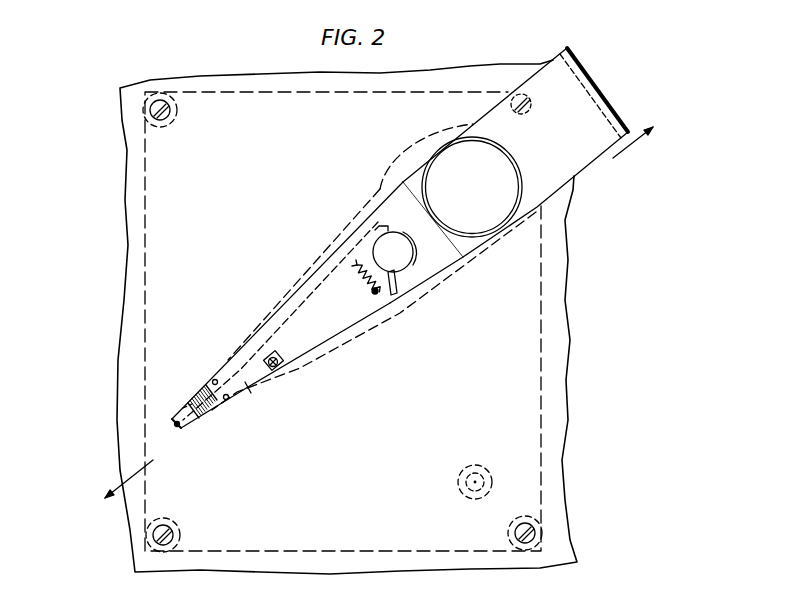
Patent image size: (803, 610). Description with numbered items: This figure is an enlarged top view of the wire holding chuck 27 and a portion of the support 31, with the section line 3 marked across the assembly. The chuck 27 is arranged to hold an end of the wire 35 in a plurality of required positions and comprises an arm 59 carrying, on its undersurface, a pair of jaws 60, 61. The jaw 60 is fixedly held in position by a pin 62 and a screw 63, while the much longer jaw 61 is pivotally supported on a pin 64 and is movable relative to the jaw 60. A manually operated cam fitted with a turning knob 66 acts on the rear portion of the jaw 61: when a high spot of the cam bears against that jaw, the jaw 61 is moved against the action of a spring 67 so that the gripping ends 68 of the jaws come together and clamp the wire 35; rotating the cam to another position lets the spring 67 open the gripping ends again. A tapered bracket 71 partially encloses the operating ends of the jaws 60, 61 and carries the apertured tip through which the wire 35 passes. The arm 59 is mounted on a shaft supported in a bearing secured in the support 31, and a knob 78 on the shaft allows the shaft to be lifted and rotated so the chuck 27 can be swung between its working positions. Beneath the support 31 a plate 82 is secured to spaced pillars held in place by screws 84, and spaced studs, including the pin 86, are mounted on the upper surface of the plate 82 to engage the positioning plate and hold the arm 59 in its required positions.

The chuck 27 is at (580, 170).
The support 31 is at (128, 248).
The wire 35 is at (190, 423).
The arm 59 is at (390, 303).
The jaw 60 is at (252, 396).
The jaw 61 is at (226, 371).
The pin 62 is at (232, 396).
The screw 63 is at (280, 354).
The pin 64 is at (212, 382).
The turning knob 66 is at (412, 259).
The spring 67 is at (359, 290).
The gripping ends 68 is at (176, 427).
The tapered bracket 71 is at (201, 414).
The knob 78 is at (503, 170).
The plate 82 is at (543, 447).
The screws 84 is at (168, 118).
The pin 86 is at (483, 470).
The section line 3- 3 is at (384, 323).